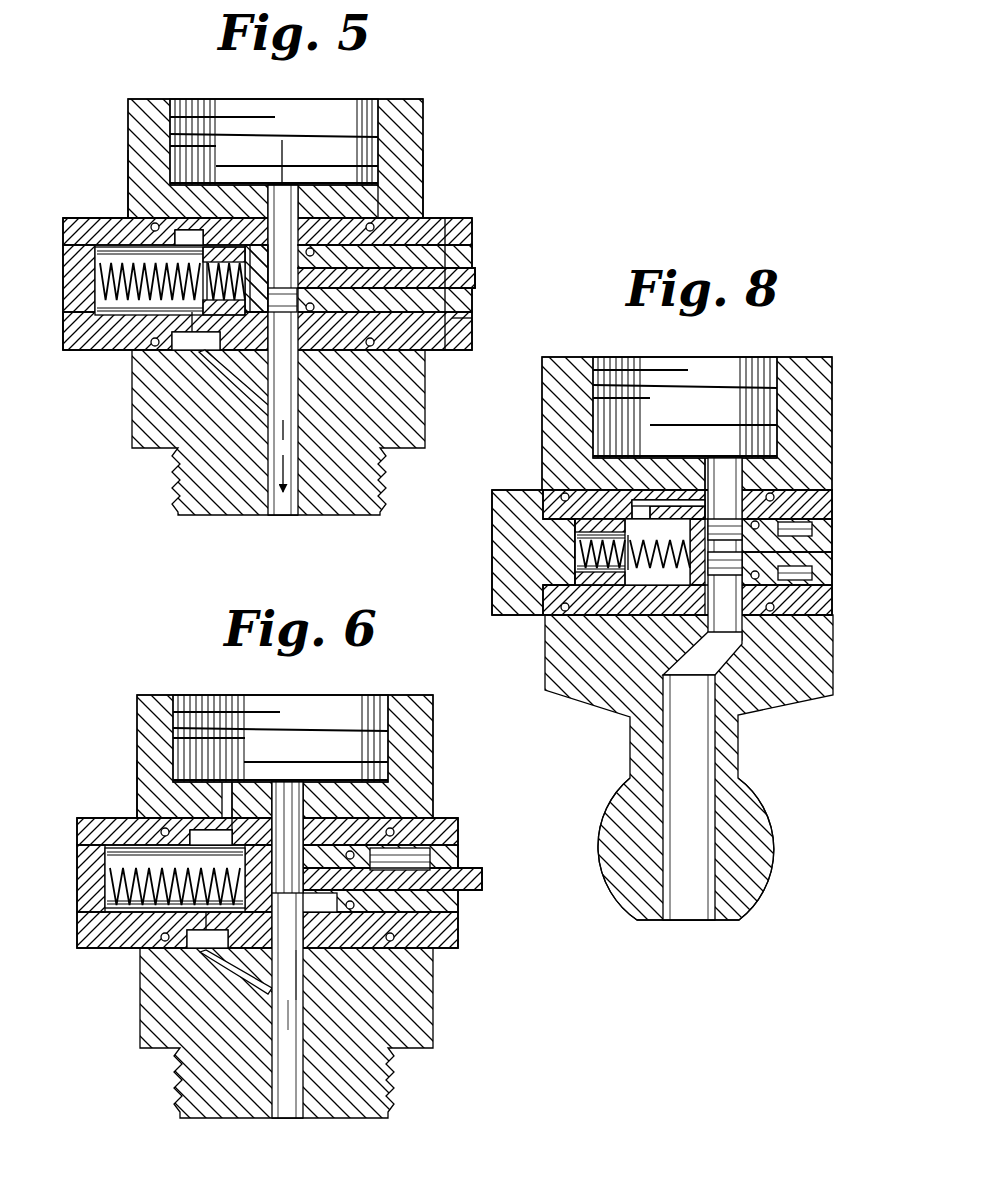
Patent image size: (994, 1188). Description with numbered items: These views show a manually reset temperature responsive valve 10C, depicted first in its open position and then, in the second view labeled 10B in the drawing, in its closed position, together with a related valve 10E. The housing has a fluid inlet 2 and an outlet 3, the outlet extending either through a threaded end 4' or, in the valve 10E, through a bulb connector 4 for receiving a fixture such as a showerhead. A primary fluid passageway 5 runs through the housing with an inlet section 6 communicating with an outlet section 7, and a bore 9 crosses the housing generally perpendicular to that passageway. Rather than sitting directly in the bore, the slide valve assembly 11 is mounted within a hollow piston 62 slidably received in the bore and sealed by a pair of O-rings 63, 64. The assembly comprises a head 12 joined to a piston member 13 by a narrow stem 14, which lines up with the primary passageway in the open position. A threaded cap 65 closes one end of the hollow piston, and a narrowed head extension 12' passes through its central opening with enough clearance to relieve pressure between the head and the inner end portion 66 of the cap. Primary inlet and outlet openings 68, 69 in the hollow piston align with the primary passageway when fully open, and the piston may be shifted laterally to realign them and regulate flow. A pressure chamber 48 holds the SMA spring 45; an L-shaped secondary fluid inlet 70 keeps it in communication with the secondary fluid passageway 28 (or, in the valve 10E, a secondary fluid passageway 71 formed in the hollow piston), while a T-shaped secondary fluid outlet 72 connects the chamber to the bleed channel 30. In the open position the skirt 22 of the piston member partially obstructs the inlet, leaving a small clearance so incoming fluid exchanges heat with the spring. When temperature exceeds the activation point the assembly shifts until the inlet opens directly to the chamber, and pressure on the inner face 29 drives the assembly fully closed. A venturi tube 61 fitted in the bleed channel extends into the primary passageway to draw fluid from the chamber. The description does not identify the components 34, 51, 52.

In FIG. 5, the fluid inlet 2 is at (356, 112).
In FIG. 6, the fluid inlet 2 is at (346, 702).
In FIG. 8, the fluid inlet 2 is at (735, 364).
In FIG. 5, the outlet 3 is at (280, 503).
In FIG. 6, the outlet 3 is at (285, 1122).
In FIG. 8, the outlet 3 is at (706, 933).
In FIG. 8, the bulb connector 4 is at (714, 849).
In FIG. 5, the threaded end 4' is at (259, 432).
In FIG. 6, the threaded end 4' is at (263, 1033).
In FIG. 5, the primary fluid passageway 5 is at (302, 350).
In FIG. 8, the primary fluid passageway 5 is at (712, 752).
In FIG. 5, the inlet section 6 is at (287, 212).
In FIG. 5, the outlet section 7 is at (292, 432).
In FIG. 5, the bore 9 is at (475, 334).
In FIG. 6, the valve assembly 10B is at (125, 777).
In FIG. 5, the temperature responsive valve 10C is at (441, 192).
In FIG. 8, the valve 10E is at (606, 718).
In FIG. 5, the slide valve assembly 11 is at (414, 248).
In FIG. 8, the slide valve assembly 11 is at (833, 496).
In FIG. 8, the head 12 is at (831, 545).
In FIG. 5, the narrowed head extension 12' is at (414, 288).
In FIG. 6, the narrowed head extension 12' is at (417, 864).
In FIG. 5, the piston member 13 is at (248, 236).
In FIG. 6, the piston member 13 is at (290, 922).
In FIG. 5, the narrow stem 14 is at (298, 242).
In FIG. 5, the skirt 22 is at (87, 331).
In FIG. 5, the secondary fluid passageway 28 is at (205, 205).
In FIG. 6, the secondary fluid passageway 28 is at (285, 758).
In FIG. 6, the inner face 29 is at (285, 909).
In FIG. 6, the bleed channel 30 is at (262, 976).
In FIG. 8, the bleed channel 30 is at (727, 632).
In FIG. 6, the seal 34 is at (400, 858).
In FIG. 5, the SMA spring 45 is at (97, 290).
In FIG. 6, the SMA spring 45 is at (105, 879).
In FIG. 8, the SMA spring 45 is at (604, 552).
In FIG. 5, the pressure chamber 48 is at (97, 256).
In FIG. 8, the pressure chamber 48 is at (608, 613).
In FIG. 6, the spool land 51 is at (322, 840).
In FIG. 6, the spool land 52 is at (380, 908).
In FIG. 5, the venturi tube 61 is at (250, 404).
In FIG. 5, the hollow piston 62 is at (62, 342).
In FIG. 6, the hollow piston 62 is at (77, 957).
In FIG. 8, the hollow piston 62 is at (833, 602).
In FIG. 5, the O-ring 63 is at (138, 218).
In FIG. 5, the O-ring 64 is at (390, 201).
In FIG. 5, the threaded cap 65 is at (476, 244).
In FIG. 8, the threaded cap 65 is at (492, 558).
In FIG. 5, the inner end portion 66 is at (330, 320).
In FIG. 6, the primary inlet opening 68 is at (293, 790).
In FIG. 6, the primary outlet opening 69 is at (300, 964).
In FIG. 5, the secondary fluid inlet 70 is at (193, 228).
In FIG. 6, the secondary fluid inlet 70 is at (196, 823).
In FIG. 8, the secondary fluid inlet 70 is at (648, 500).
In FIG. 8, the secondary fluid passageway 71 is at (710, 497).
In FIG. 5, the secondary fluid outlet 72 is at (195, 350).
In FIG. 6, the secondary fluid outlet 72 is at (195, 948).
In FIG. 8, the secondary fluid outlet 72 is at (650, 626).